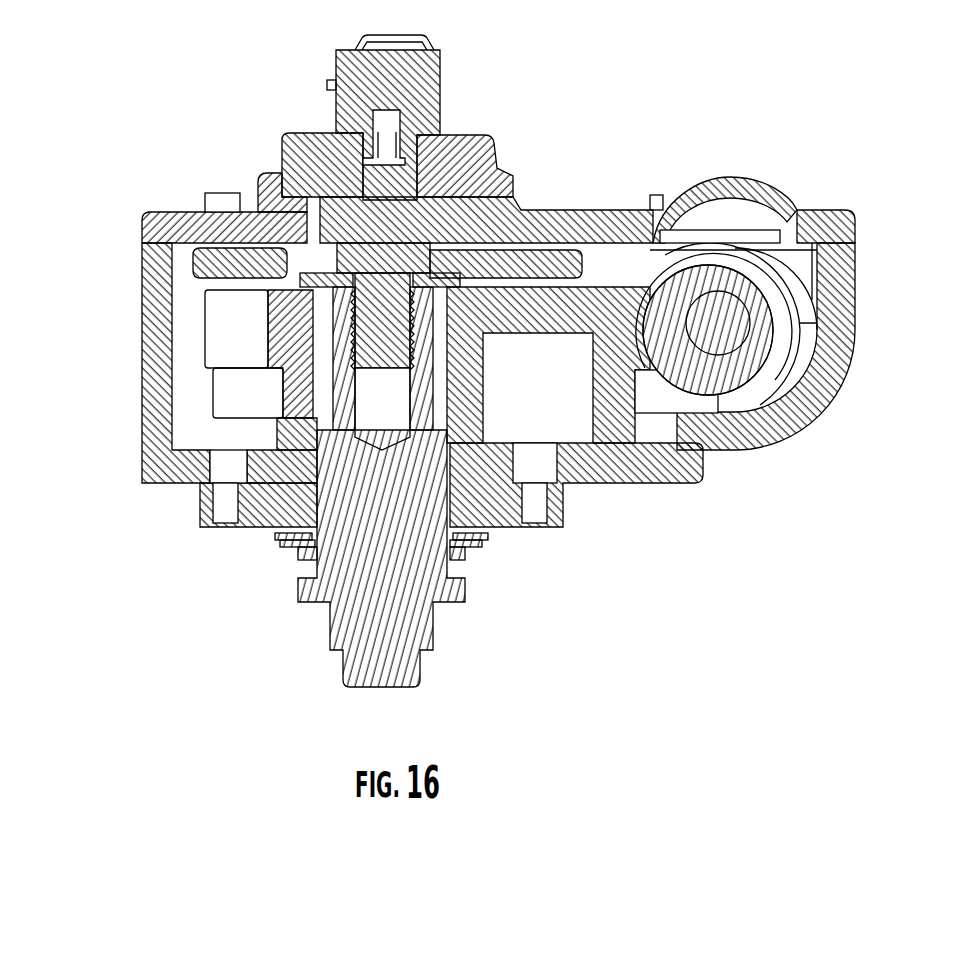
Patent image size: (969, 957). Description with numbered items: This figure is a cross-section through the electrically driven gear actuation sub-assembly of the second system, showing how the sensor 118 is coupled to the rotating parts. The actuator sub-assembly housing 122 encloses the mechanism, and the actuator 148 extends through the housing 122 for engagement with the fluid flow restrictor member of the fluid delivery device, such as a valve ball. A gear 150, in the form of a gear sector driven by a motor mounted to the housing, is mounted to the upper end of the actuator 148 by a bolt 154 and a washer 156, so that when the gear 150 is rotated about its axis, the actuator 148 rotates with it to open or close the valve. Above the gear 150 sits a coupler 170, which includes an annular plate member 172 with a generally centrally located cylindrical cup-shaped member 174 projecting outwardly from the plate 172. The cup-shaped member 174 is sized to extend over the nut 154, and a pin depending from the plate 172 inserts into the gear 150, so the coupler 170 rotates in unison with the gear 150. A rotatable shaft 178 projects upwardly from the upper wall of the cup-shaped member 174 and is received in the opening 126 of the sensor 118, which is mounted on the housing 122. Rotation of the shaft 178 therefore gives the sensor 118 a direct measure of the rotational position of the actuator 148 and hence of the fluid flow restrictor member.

The sensor 118 is at (440, 92).
The actuator sub-assembly housing 122 is at (133, 462).
The opening 126 is at (420, 178).
The actuator 148 is at (312, 632).
The gear 150 is at (598, 292).
The bolt 154 is at (303, 222).
The washer 156 is at (277, 250).
The coupler 170 is at (512, 242).
The annular plate member 172 is at (532, 268).
The cylindrical cup-shaped member 174 is at (357, 247).
The rotatable shaft 178 is at (338, 135).